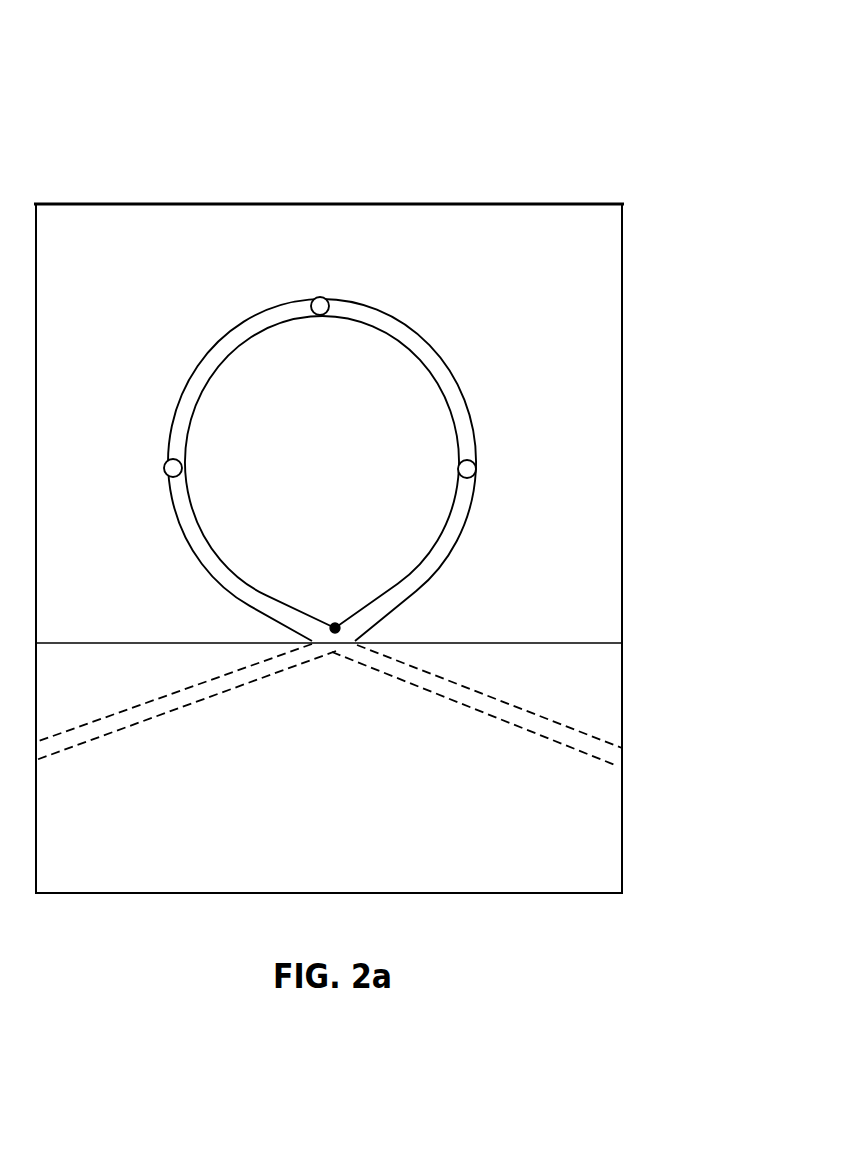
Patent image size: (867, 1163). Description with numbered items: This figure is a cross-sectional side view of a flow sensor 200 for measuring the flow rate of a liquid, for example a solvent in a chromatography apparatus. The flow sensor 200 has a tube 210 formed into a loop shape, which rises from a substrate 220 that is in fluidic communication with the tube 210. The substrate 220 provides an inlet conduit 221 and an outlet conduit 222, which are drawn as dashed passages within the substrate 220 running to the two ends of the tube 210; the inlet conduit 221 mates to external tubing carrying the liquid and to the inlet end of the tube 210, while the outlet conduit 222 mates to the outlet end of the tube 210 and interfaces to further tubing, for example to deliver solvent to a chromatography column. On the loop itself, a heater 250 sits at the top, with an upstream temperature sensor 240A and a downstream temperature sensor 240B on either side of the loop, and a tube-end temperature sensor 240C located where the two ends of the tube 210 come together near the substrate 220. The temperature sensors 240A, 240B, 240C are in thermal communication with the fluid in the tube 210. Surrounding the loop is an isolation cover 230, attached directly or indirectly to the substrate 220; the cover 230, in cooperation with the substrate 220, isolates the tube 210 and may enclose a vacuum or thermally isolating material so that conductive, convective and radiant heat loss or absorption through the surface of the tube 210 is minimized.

The flow sensor 200 is at (198, 74).
The tube 210 is at (420, 332).
The substrate 220 is at (365, 803).
The inlet conduit 221 is at (130, 739).
The outlet conduit 222 is at (511, 737).
The isolation cover 230 is at (623, 295).
The upstream temperature sensor 240A is at (165, 474).
The downstream temperature sensor 240B is at (477, 468).
The tube-end temperature sensor 240C is at (334, 624).
The heater 250 is at (323, 297).